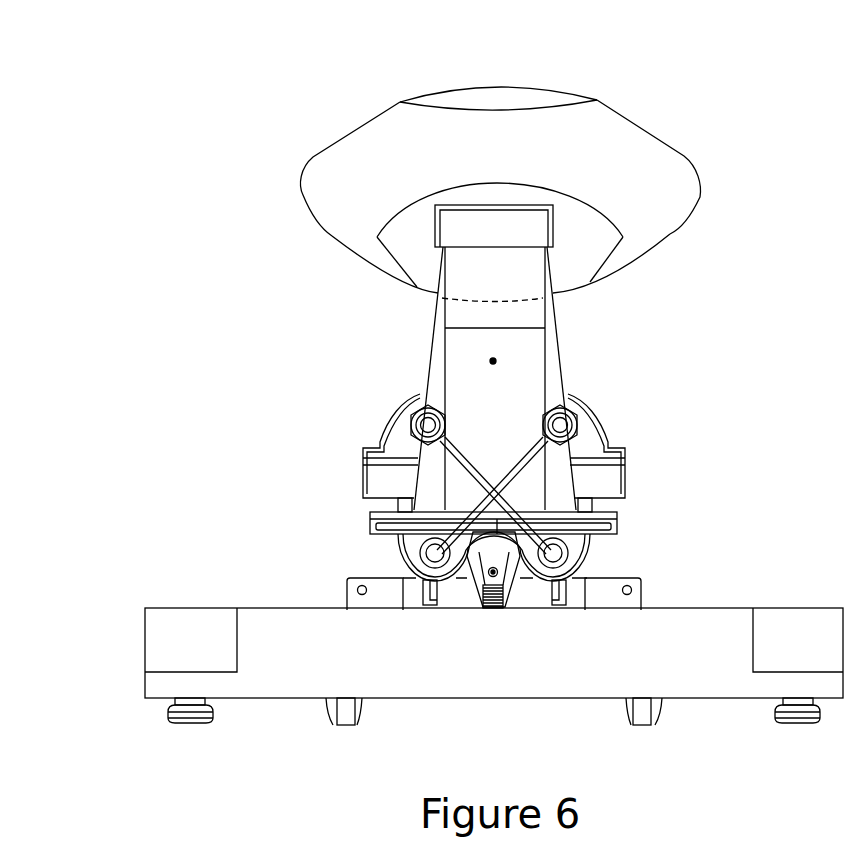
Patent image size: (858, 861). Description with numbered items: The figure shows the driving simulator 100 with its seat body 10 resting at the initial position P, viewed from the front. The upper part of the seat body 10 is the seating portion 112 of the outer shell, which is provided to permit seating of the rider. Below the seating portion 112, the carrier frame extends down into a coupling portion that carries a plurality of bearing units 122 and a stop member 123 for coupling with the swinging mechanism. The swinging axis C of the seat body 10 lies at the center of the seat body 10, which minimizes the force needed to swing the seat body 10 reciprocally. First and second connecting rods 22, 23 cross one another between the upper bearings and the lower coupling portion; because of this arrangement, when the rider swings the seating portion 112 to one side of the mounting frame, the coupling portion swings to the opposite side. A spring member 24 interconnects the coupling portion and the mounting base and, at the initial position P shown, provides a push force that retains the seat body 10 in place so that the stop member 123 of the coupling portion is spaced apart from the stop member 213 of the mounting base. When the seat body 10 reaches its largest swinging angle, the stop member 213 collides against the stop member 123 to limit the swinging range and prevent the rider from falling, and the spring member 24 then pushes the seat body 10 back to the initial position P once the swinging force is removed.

The seat body 10 is at (318, 117).
The seating portion 112 is at (497, 100).
The initial position P is at (670, 111).
The driving simulator 100 is at (847, 80).
The swinging axis C is at (493, 361).
The first connecting rod 22 is at (492, 486).
The second connecting rod 23 is at (500, 487).
The bearing unit 122 is at (608, 562).
The stop member of the coupling portion 123 is at (507, 565).
The stop member of the mounting base 213 is at (577, 597).
The spring member 24 is at (493, 608).